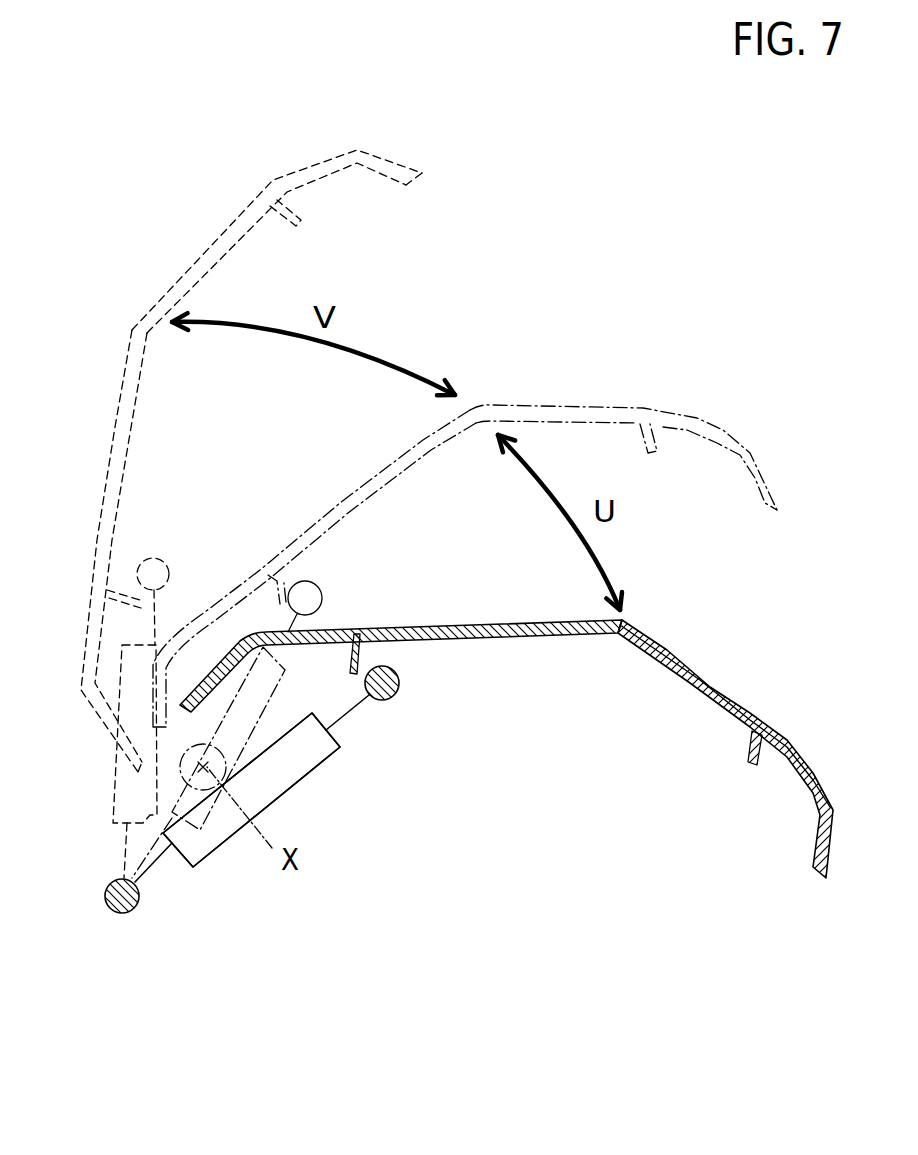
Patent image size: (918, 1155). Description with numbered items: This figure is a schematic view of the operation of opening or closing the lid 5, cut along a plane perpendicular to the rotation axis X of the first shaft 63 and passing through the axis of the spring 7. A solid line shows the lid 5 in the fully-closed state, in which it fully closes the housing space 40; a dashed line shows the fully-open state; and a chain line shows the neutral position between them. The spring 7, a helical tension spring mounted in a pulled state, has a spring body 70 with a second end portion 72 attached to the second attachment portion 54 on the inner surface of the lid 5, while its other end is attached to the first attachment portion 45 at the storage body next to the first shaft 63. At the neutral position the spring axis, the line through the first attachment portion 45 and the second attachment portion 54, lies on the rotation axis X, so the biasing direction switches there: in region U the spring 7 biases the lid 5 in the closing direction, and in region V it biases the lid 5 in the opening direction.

The lid 5 is at (236, 220).
The spring 7 is at (120, 633).
The housing space 40 is at (617, 823).
The first attachment portion 45 is at (132, 912).
The second attachment portion 54 is at (157, 558).
The first shaft 63 is at (203, 790).
The spring body 70 is at (280, 797).
The second end portion 72 is at (355, 707).